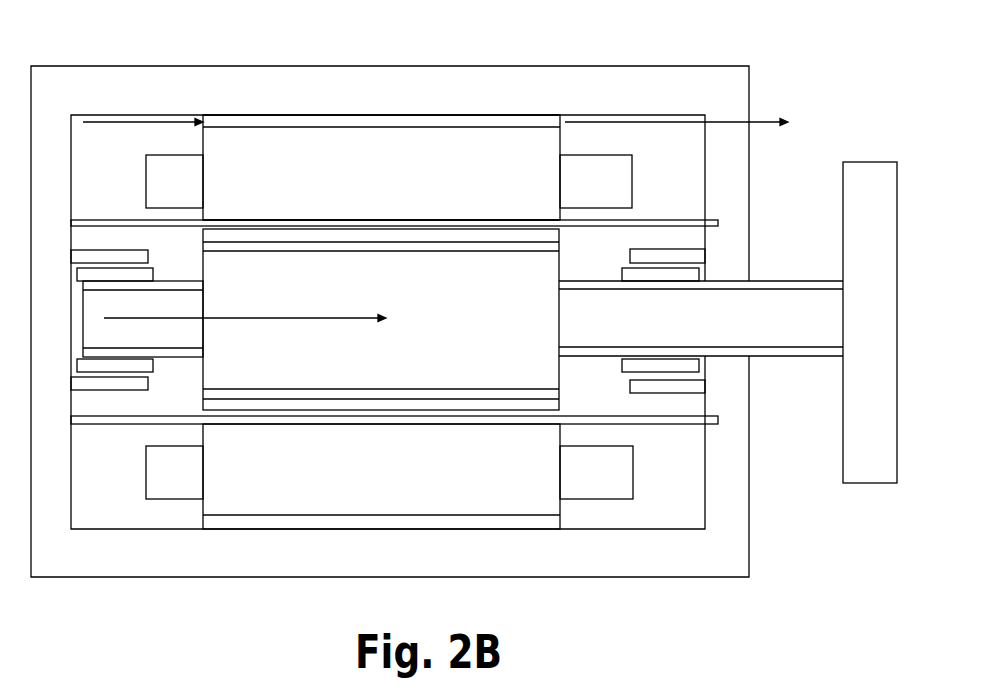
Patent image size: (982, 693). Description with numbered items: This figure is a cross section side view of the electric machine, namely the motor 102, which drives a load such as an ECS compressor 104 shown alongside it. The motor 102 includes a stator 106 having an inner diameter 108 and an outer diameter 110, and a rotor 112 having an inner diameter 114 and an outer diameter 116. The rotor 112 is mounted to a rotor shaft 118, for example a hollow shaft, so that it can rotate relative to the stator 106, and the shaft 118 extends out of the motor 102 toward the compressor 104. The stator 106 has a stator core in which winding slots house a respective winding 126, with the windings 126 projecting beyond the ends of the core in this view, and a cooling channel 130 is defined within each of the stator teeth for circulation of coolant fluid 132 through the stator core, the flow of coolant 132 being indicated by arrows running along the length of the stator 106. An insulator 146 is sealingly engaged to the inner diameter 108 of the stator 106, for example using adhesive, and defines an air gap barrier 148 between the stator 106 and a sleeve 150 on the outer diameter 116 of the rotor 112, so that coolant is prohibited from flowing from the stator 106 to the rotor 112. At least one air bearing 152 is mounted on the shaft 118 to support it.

The motor 102 is at (94, 66).
The ECS compressor 104 is at (889, 332).
The stator 106 is at (384, 181).
The inner diameter 108 is at (497, 212).
The outer diameter 110 is at (475, 119).
The rotor 112 is at (467, 331).
The inner diameter 114 is at (423, 397).
The outer diameter 116 is at (463, 408).
The rotor shaft 118 is at (173, 320).
The winding 126 is at (630, 192).
The cooling channel 130 is at (409, 120).
The coolant fluid 132 is at (762, 122).
The insulator 146 is at (99, 221).
The air gap barrier 148 is at (93, 238).
The sleeve 150 is at (242, 232).
The air bearing 152 is at (628, 254).